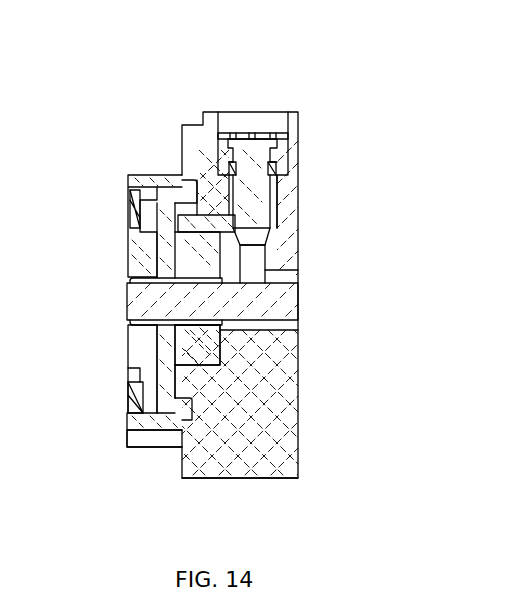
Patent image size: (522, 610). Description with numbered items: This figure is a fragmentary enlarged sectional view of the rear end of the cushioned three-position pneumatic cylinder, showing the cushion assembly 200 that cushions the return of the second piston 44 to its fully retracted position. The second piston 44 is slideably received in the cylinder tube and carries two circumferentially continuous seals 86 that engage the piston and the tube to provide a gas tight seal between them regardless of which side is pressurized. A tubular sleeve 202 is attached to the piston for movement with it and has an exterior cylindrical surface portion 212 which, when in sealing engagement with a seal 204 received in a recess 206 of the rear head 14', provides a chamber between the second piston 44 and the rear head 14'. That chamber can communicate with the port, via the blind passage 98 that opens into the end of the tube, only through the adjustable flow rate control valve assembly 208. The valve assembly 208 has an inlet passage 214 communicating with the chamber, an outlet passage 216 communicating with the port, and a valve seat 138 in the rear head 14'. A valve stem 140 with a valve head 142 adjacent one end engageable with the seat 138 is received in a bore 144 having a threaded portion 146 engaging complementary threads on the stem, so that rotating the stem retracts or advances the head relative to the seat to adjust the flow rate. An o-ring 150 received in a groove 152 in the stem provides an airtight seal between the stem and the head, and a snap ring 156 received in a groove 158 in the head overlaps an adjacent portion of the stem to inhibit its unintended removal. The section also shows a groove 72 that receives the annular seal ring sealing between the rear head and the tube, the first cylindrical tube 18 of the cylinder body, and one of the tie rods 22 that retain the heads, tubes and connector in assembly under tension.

The cushion assembly 200 is at (107, 85).
The bore 144 is at (252, 133).
The snap ring 156 is at (232, 132).
The adjustable flow rate control valve assembly 208 is at (278, 165).
The groove 152 is at (232, 167).
The groove 158 is at (288, 135).
The inlet passage 214 is at (222, 224).
The o-ring 150 is at (274, 165).
The valve stem 140 is at (276, 190).
The threaded portion 146 is at (276, 207).
The valve head 142 is at (268, 237).
The valve seat 138 is at (268, 245).
The outlet passage 216 is at (265, 249).
The blind passage 98 is at (278, 278).
The seals 86 is at (138, 212).
The seal 204 is at (163, 256).
The exterior cylindrical surface portion 212 is at (143, 278).
The tubular sleeve 202 is at (145, 305).
The second piston 44 is at (142, 342).
The first cylindrical tube 18 is at (128, 424).
The tie rods 22 is at (131, 451).
The groove 72 is at (173, 403).
The recess 206 is at (197, 368).
The rear head 14' is at (240, 505).